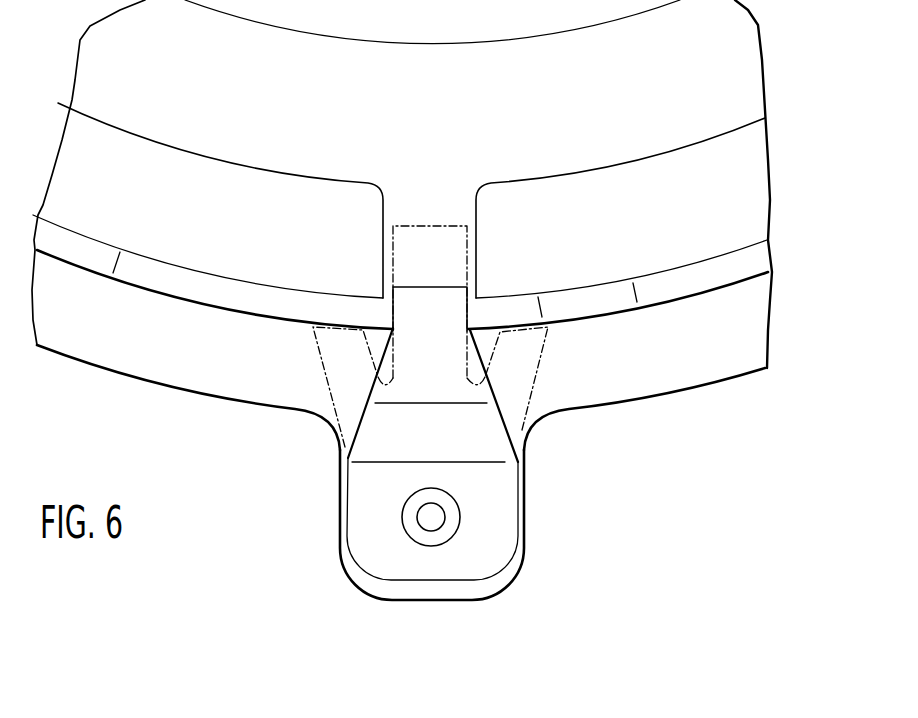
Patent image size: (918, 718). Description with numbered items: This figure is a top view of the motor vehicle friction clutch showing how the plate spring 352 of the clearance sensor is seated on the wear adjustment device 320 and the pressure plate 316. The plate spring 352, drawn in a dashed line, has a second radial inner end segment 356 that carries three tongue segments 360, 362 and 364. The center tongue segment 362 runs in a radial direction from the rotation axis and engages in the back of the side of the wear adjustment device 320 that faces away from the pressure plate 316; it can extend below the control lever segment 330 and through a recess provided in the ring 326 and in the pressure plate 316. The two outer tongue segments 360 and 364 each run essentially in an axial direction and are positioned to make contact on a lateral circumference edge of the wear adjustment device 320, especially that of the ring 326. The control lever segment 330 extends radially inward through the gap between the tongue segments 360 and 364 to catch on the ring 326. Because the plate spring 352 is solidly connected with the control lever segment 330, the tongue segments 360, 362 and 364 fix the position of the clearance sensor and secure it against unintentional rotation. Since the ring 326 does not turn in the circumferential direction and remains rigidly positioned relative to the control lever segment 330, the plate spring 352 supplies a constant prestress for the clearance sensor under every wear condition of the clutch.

The wear adjustment device 320 is at (625, 240).
The ring 326 is at (718, 277).
The pressure plate 316 is at (652, 368).
The control lever segment 330 is at (372, 440).
The plate spring 352 is at (522, 413).
The center tongue segment 362 is at (418, 232).
The tongue segment 360 is at (333, 352).
The second radial inner end segment 356 is at (551, 345).
The tongue segment 364 is at (523, 332).